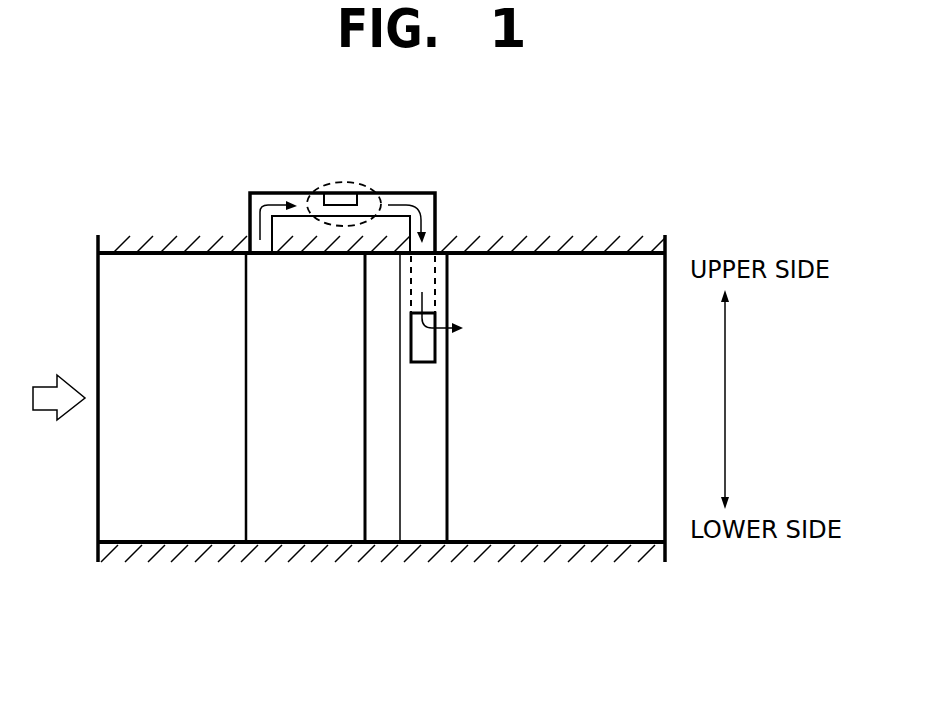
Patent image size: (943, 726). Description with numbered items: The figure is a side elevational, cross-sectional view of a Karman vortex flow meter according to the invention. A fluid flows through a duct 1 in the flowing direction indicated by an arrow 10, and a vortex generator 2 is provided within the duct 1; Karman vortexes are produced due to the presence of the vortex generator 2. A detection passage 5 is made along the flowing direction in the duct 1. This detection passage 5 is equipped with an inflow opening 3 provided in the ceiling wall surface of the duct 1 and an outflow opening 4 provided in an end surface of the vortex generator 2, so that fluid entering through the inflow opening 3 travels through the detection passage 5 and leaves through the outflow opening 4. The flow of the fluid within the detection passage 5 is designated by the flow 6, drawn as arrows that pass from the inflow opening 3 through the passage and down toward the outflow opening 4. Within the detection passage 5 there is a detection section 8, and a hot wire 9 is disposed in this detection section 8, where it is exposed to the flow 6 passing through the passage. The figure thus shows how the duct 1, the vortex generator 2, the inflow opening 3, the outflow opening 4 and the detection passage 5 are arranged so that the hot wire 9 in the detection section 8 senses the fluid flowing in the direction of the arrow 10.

The duct 1 is at (570, 560).
The vortex generator 2 is at (372, 464).
The inflow opening 3 is at (258, 254).
The outflow opening 4 is at (428, 348).
The detection passage 5 is at (418, 193).
The flow of fluid within the detection passage 6 is at (262, 195).
The detection section 8 is at (360, 182).
The hot wire 9 is at (341, 202).
The arrow indicative of flowing direction 10 is at (53, 412).